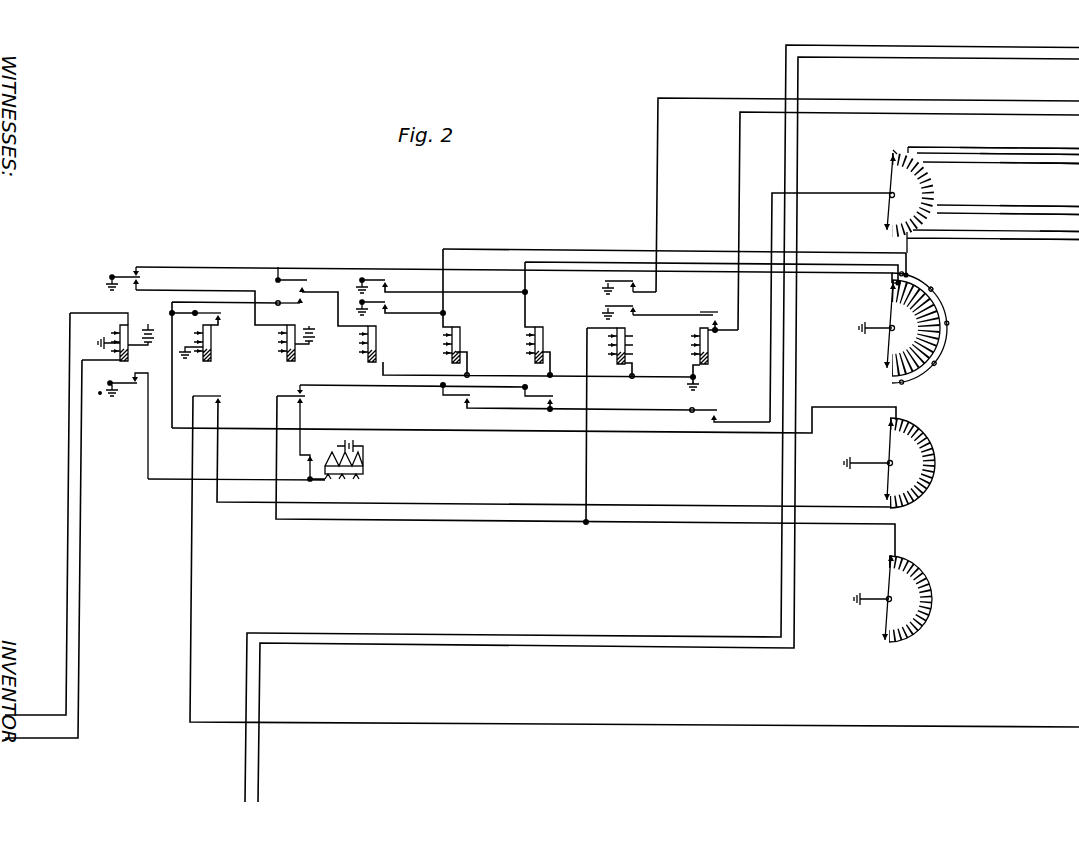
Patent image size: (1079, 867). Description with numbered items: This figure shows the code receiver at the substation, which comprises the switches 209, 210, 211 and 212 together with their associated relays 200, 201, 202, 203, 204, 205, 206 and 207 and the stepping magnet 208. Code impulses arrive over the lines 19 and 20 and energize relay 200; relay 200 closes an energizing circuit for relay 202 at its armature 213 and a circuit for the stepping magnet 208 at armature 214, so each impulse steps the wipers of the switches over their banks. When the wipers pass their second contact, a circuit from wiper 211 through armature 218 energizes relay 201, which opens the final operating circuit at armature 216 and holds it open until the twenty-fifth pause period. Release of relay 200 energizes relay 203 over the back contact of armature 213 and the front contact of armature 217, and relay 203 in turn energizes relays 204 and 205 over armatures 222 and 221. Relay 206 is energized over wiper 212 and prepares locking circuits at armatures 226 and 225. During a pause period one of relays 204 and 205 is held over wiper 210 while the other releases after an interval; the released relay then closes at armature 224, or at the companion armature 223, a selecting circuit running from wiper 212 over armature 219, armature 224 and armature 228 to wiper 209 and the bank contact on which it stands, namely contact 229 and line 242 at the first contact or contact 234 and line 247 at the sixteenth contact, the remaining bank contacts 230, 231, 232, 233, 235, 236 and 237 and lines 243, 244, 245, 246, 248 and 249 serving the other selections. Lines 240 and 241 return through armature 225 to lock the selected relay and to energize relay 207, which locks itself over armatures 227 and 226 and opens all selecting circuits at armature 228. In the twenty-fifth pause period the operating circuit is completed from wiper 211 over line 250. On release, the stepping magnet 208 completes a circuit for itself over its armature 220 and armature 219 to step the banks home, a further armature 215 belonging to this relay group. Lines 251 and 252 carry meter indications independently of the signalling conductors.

The line 19 is at (49, 713).
The line 20 is at (40, 738).
The relay 200 is at (112, 337).
The relay 201 is at (212, 353).
The relay 202 is at (284, 348).
The relay 203 is at (359, 348).
The relay 204 is at (443, 341).
The relay 205 is at (526, 341).
The relay 206 is at (633, 343).
The relay 207 is at (692, 358).
The stepping magnet 208 is at (364, 471).
The switch 209 is at (886, 193).
The switch 210 is at (898, 328).
The switch 211 is at (889, 463).
The switch 212 is at (889, 598).
The armature 213 is at (114, 275).
The armature 214 is at (128, 388).
The contact 215 is at (216, 311).
The armature 216 is at (207, 395).
The armature 217 is at (292, 278).
The armature 218 is at (300, 300).
The armature 219 is at (292, 394).
The armature 220 is at (236, 442).
The armature 221 is at (378, 278).
The armature 222 is at (390, 300).
The contact 223 is at (457, 400).
The armature 224 is at (539, 404).
The armature 225 is at (602, 296).
The armature 226 is at (607, 312).
The armature 227 is at (705, 310).
The armature 228 is at (703, 410).
The contact 229 is at (896, 153).
The selector contact 230 is at (942, 142).
The selector contact 231 is at (923, 160).
The selector contact 232 is at (928, 168).
The selector contact 233 is at (940, 197).
The contact 234 is at (935, 214).
The selector contact 235 is at (913, 233).
The selector contact 236 is at (993, 251).
The selector contact 237 is at (895, 285).
The line 240 is at (1055, 103).
The line 241 is at (1057, 115).
The line 242 is at (1020, 148).
The conductor 243 is at (1014, 153).
The conductor 244 is at (1061, 164).
The conductor 245 is at (1058, 183).
The conductor 246 is at (1009, 205).
The line 247 is at (1017, 213).
The conductor 248 is at (1063, 232).
The conductor 249 is at (1048, 240).
The line 250 is at (634, 563).
The line 251 is at (1056, 58).
The line 252 is at (1050, 46).